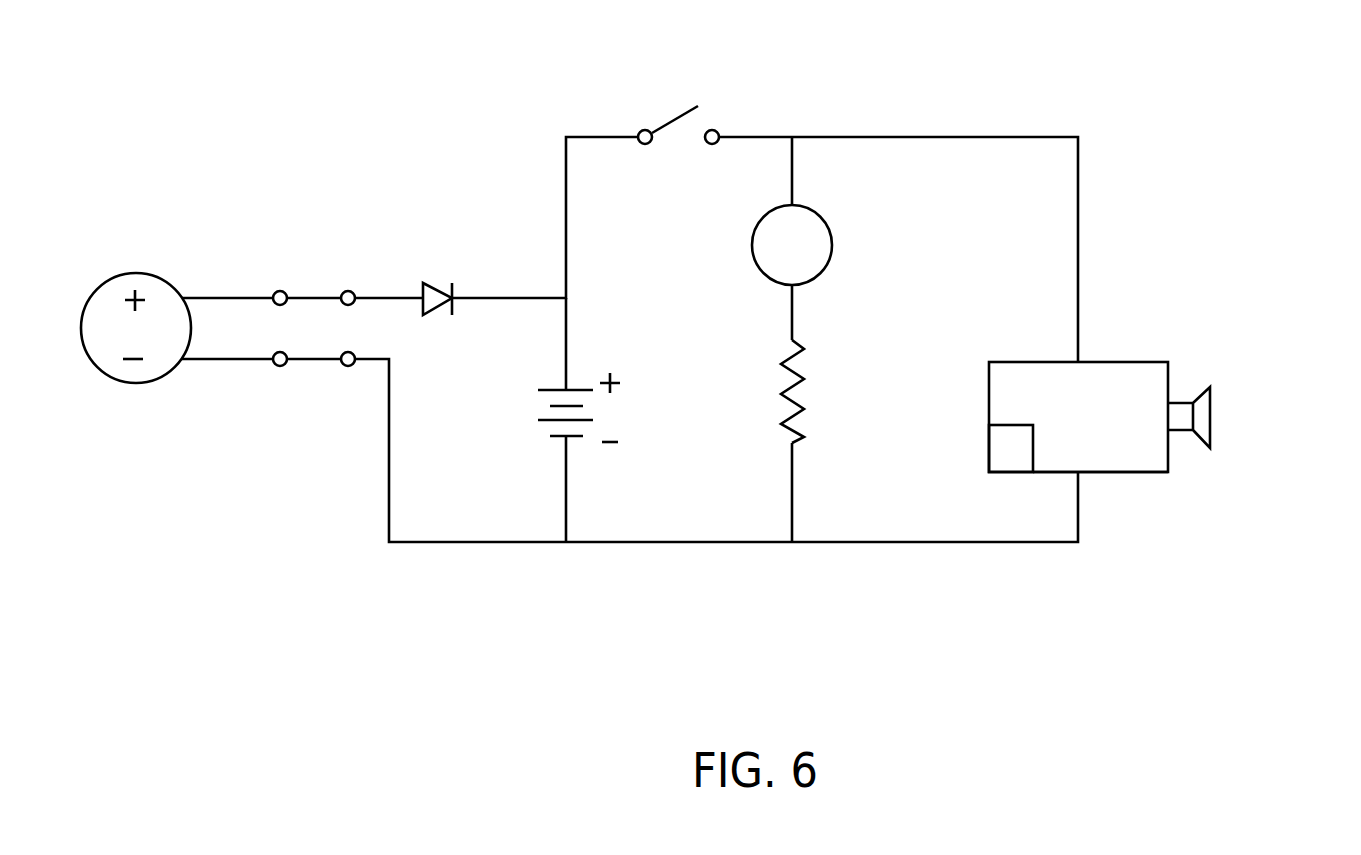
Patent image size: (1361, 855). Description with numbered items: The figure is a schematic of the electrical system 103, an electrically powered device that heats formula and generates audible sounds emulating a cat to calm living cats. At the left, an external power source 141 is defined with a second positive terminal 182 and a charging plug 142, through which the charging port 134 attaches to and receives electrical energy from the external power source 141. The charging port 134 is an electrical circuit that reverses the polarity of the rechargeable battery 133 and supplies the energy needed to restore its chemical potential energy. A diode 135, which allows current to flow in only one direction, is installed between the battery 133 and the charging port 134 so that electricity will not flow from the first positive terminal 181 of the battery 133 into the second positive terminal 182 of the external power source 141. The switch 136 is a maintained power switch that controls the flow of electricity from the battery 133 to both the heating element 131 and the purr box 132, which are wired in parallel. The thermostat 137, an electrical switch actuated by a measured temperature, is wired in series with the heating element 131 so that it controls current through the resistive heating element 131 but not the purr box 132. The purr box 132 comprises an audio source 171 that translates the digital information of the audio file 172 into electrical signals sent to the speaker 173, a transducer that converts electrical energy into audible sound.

The electrical system 103 is at (356, 109).
The external power source 141 is at (137, 273).
The second positive terminal 182 is at (142, 300).
The charging port 134 is at (348, 291).
The charging plug 142 is at (280, 366).
The diode 135 is at (433, 278).
The switch 136 is at (673, 125).
The battery 133 is at (612, 413).
The first positive terminal 181 is at (600, 370).
The thermostat 137 is at (832, 243).
The heating element 131 is at (802, 377).
The purr box 132 is at (1123, 362).
The audio file 172 is at (1008, 465).
The audio source 171 is at (1115, 457).
The speaker 173 is at (1210, 417).